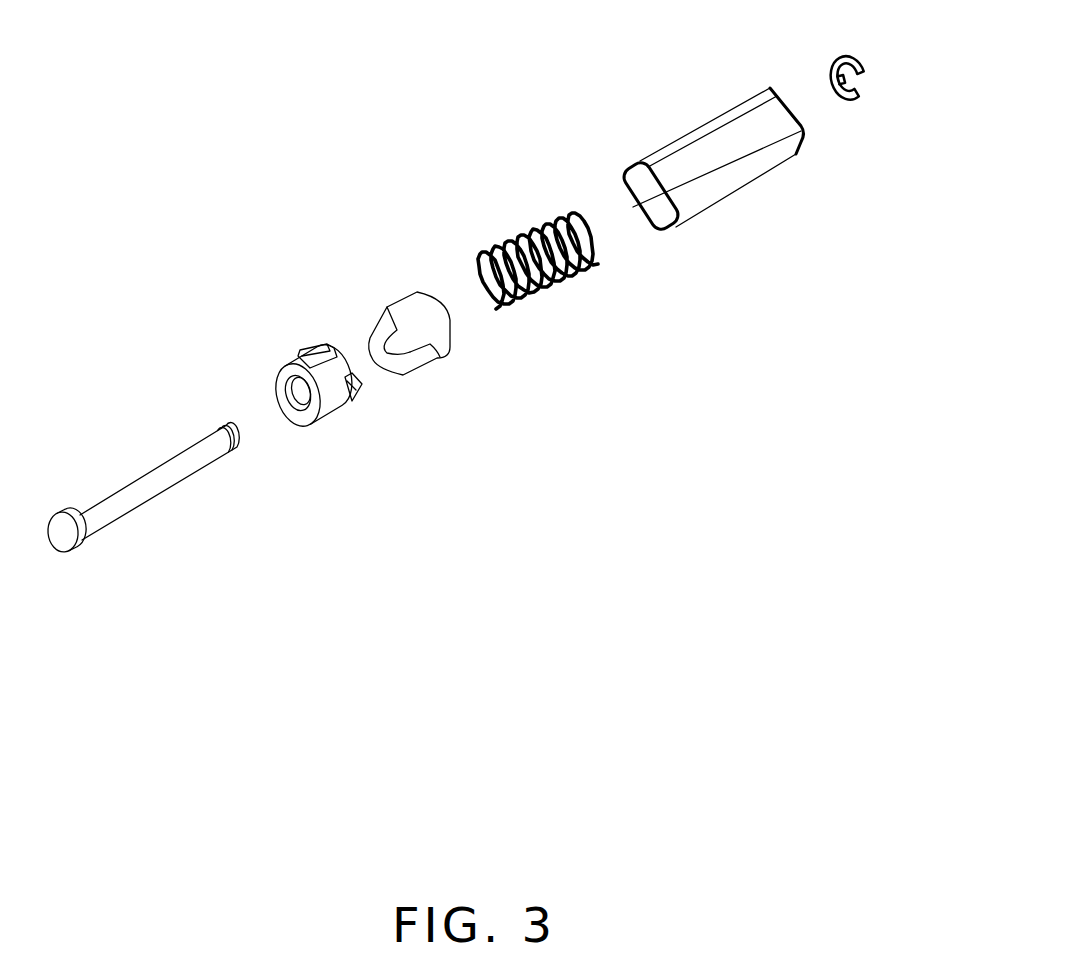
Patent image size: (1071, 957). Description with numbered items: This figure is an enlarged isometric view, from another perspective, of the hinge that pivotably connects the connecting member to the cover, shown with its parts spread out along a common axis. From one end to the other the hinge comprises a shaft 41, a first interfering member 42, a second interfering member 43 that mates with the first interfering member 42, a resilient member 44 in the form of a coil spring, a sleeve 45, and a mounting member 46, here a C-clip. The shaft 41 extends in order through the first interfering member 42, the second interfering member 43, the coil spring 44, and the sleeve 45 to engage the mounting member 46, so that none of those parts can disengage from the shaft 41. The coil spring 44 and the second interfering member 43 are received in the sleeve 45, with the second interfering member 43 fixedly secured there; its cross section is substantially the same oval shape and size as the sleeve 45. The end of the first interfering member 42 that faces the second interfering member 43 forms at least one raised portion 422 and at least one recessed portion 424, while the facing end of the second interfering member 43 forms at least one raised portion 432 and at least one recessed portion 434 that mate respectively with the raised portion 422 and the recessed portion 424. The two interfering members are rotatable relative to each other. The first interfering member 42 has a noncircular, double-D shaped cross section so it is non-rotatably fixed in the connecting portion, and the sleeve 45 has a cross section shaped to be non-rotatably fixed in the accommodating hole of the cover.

The shaft 41 is at (128, 502).
The first interfering member 42 is at (286, 384).
The raised portion 422 is at (347, 387).
The recessed portion 424 is at (343, 352).
The second interfering member 43 is at (429, 356).
The raised portion 432 is at (382, 352).
The recessed portion 434 is at (432, 350).
The resilient member 44 is at (523, 230).
The sleeve 45 is at (683, 152).
The mounting member 46 is at (838, 60).